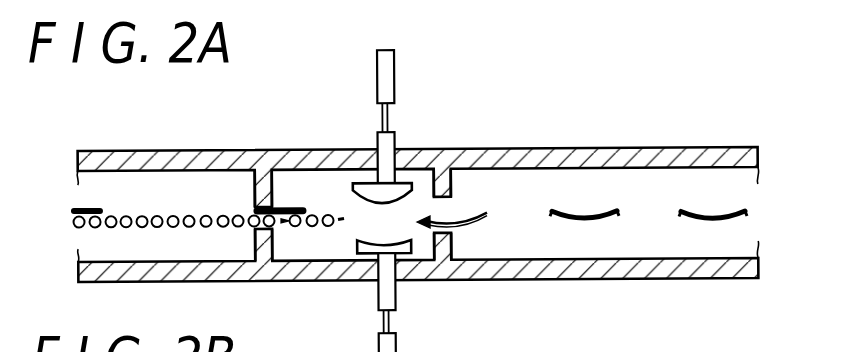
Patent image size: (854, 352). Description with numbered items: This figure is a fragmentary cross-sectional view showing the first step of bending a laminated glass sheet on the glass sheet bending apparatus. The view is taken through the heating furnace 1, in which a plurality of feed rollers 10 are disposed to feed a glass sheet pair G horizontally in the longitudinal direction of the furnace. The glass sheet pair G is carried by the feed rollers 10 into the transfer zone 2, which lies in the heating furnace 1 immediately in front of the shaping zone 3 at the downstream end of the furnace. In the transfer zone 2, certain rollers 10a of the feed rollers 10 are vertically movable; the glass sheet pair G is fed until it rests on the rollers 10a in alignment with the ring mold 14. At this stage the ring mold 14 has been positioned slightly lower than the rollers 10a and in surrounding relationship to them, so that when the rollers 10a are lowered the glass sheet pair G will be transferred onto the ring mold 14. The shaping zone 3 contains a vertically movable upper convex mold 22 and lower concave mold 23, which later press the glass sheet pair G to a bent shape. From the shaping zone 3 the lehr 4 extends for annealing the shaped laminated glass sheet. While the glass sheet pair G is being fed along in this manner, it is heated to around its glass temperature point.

The heating furnace 1 is at (161, 149).
The transfer zone 2 is at (290, 171).
The shaping zone 3 is at (400, 214).
The lehr 4 is at (592, 185).
The feed rollers 10 is at (156, 227).
The vertically movable rollers 10a is at (314, 227).
The ring mold 14 is at (272, 228).
The upper convex mold 22 is at (354, 177).
The lower concave mold 23 is at (407, 256).
The glass sheet pair G is at (89, 209).